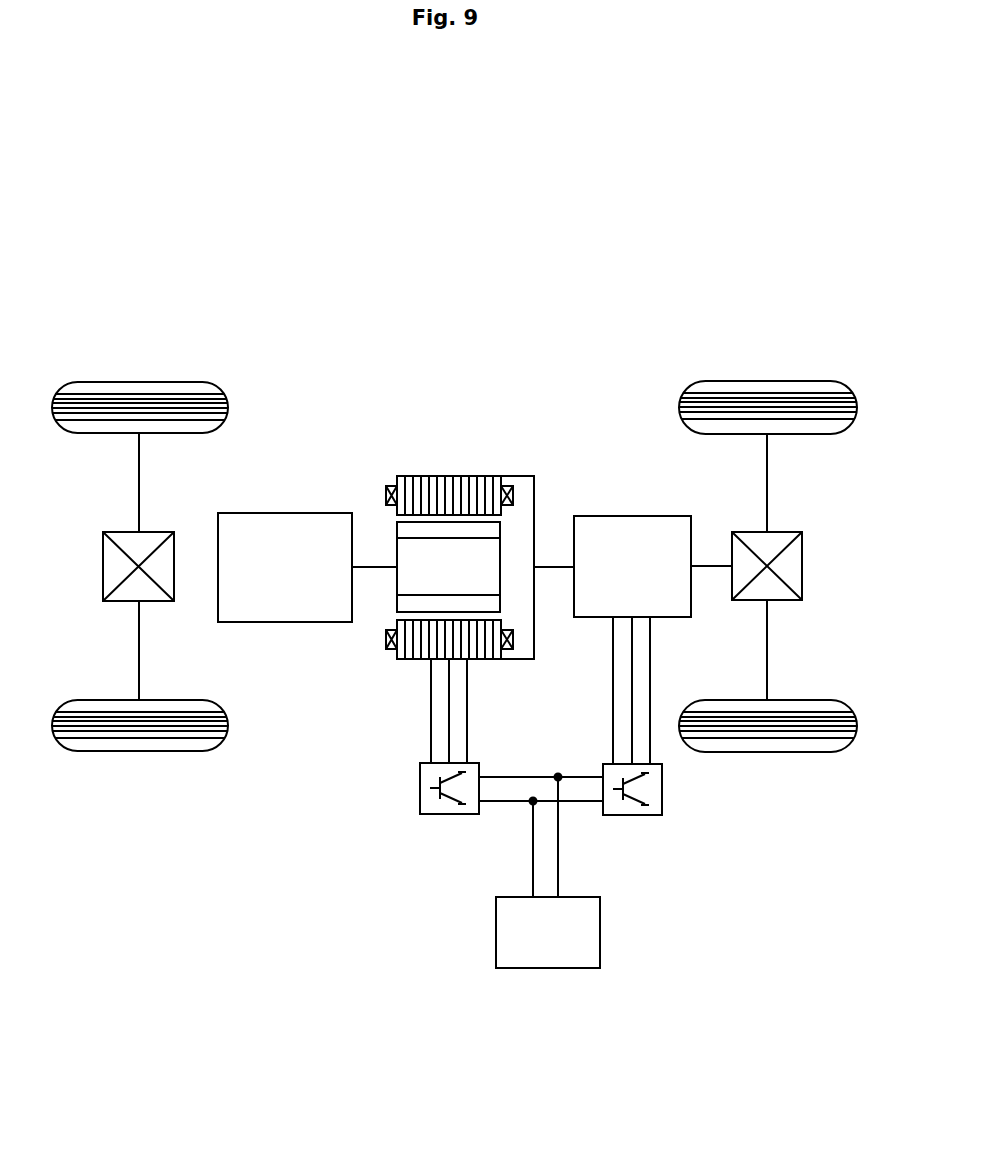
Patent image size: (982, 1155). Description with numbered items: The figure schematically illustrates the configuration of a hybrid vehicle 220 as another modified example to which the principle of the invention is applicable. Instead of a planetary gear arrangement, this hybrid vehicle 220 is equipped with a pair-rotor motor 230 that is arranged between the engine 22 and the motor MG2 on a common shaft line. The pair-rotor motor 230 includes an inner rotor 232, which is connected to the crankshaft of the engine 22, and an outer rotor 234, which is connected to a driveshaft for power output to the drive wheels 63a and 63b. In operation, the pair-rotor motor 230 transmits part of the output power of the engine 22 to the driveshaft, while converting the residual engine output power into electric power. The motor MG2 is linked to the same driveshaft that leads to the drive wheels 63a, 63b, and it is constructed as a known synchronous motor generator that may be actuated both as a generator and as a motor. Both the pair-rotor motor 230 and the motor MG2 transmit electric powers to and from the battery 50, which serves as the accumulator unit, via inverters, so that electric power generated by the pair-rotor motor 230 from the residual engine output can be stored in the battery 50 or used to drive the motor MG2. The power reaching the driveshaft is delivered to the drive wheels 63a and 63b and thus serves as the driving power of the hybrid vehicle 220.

The hybrid vehicle 220 is at (525, 268).
The engine 22 is at (285, 622).
The pair-rotor motor 230 is at (382, 331).
The inner rotor 232 is at (397, 557).
The outer rotor 234 is at (453, 476).
The motor MG2 is at (633, 516).
The drive wheel 63a is at (767, 381).
The drive wheel 63b is at (767, 752).
The battery 50 is at (600, 930).